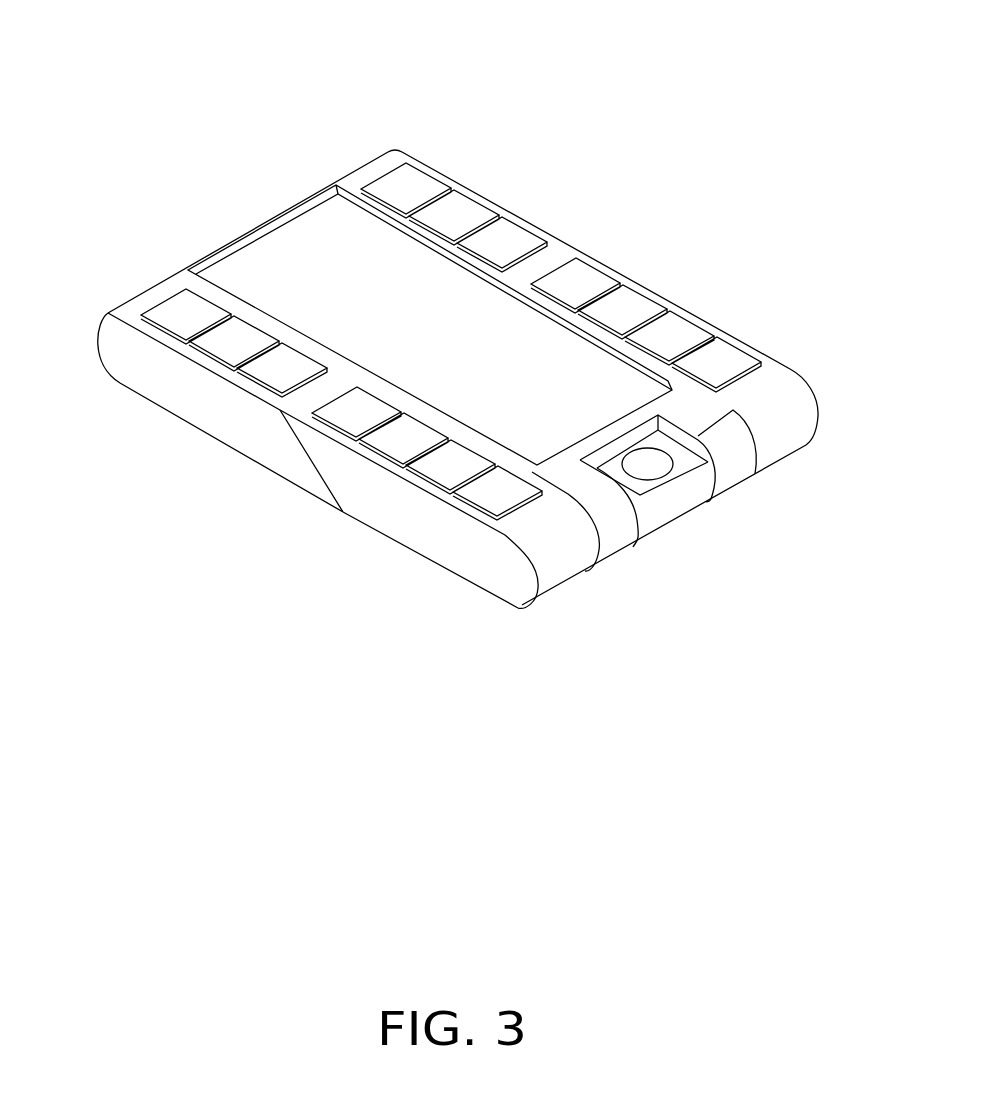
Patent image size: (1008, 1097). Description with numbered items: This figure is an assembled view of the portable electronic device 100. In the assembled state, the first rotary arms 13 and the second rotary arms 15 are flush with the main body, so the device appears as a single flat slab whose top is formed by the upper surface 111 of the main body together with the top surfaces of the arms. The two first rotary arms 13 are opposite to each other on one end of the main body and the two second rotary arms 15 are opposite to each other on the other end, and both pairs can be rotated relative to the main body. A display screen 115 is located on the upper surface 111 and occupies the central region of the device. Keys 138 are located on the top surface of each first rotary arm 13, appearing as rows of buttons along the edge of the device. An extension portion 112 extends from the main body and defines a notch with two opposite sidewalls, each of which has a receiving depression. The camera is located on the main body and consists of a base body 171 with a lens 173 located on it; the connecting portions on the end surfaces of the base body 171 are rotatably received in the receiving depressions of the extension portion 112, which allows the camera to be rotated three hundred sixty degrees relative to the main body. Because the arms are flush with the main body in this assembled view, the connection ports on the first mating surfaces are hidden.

The portable electronic device 100 is at (457, 46).
The upper surface 111 is at (255, 233).
The display screen 115 is at (313, 237).
The keys 138 is at (177, 308).
The extension portion 112 is at (677, 402).
The first rotary arm 13 is at (192, 387).
The second rotary arm 15 is at (408, 513).
The base body 171 is at (650, 513).
The lens 173 is at (653, 462).